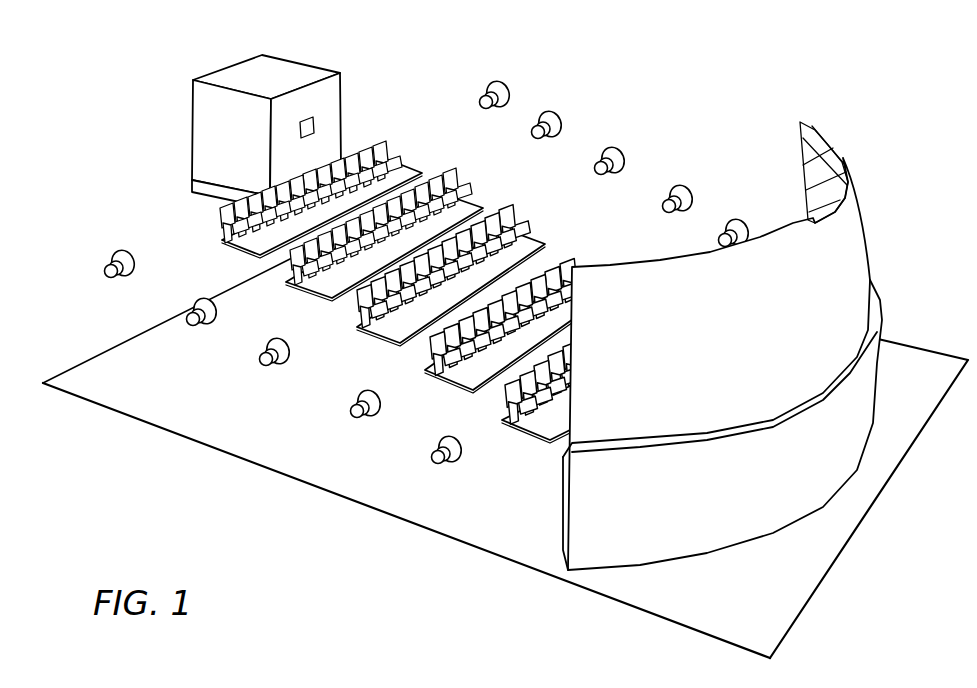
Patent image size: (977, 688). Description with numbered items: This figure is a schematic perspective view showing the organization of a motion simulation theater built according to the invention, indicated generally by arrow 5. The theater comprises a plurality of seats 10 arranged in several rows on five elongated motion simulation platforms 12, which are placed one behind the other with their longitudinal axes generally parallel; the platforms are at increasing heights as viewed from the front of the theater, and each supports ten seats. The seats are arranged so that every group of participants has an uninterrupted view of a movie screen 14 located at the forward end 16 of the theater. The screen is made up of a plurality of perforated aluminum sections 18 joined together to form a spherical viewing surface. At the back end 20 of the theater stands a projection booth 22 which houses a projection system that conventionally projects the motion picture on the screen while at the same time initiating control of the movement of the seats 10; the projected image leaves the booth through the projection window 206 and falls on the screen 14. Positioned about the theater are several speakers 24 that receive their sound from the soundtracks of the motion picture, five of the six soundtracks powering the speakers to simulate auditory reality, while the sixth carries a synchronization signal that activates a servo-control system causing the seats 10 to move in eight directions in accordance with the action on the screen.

The theater system 5 is at (434, 553).
The seats 10 is at (385, 137).
The motion simulation platforms 12 is at (428, 268).
The movie screen 14 is at (751, 336).
The forward end 16 is at (856, 538).
The perforated aluminum sections 18 is at (810, 140).
The back end 20 is at (115, 352).
The projection booth 22 is at (292, 118).
The speakers 24 is at (118, 252).
The projection window 206 is at (316, 121).